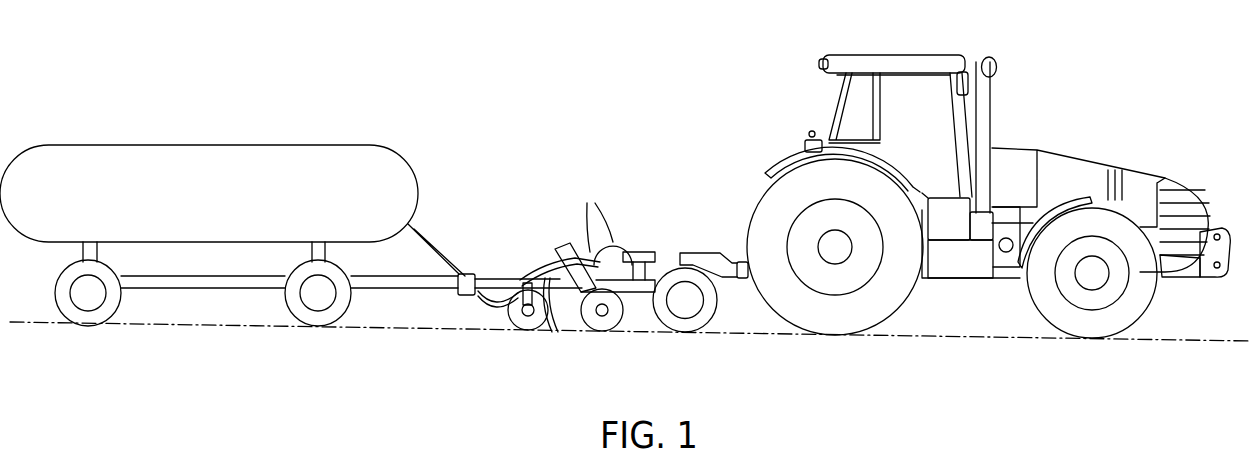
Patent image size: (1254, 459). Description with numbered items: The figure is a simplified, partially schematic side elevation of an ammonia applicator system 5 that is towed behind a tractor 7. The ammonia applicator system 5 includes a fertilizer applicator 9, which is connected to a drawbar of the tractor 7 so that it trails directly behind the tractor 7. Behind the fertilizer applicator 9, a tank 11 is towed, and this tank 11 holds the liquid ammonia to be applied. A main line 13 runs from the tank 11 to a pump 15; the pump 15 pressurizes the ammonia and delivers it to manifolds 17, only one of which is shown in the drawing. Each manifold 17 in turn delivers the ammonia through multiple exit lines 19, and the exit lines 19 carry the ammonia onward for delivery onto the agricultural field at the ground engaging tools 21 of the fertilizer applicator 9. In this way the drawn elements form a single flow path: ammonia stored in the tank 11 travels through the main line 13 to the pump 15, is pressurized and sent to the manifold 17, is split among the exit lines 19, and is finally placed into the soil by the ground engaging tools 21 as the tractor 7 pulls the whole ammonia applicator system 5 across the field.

The ammonia applicator system 5 is at (476, 58).
The tractor 7 is at (1143, 322).
The fertilizer applicator 9 is at (718, 316).
The tank 11 is at (296, 312).
The main line 13 is at (443, 245).
The pump 15 is at (525, 266).
The manifold 17 is at (645, 250).
The exit lines 19 is at (597, 215).
The ground engaging tools 21 is at (547, 327).